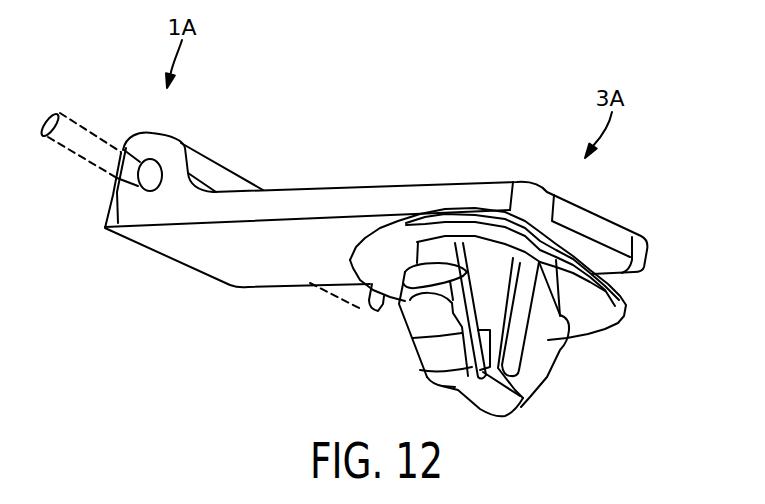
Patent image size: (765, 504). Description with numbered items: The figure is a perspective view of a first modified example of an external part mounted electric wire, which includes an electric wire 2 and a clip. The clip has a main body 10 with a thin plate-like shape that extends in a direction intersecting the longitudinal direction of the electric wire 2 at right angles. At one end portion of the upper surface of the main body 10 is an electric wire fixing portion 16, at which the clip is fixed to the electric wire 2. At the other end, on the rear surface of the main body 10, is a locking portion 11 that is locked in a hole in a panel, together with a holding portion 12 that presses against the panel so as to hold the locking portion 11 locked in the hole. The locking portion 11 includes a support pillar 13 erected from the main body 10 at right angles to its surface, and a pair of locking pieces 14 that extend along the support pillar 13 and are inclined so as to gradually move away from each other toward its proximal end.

The electric wire 2 is at (79, 156).
The main body 10 is at (347, 197).
The electric wire fixing portion 16 is at (223, 165).
The holding portion 12 is at (623, 298).
The locking piece 14 is at (433, 354).
The support pillar 13 is at (538, 340).
The locking portion 11 is at (503, 416).